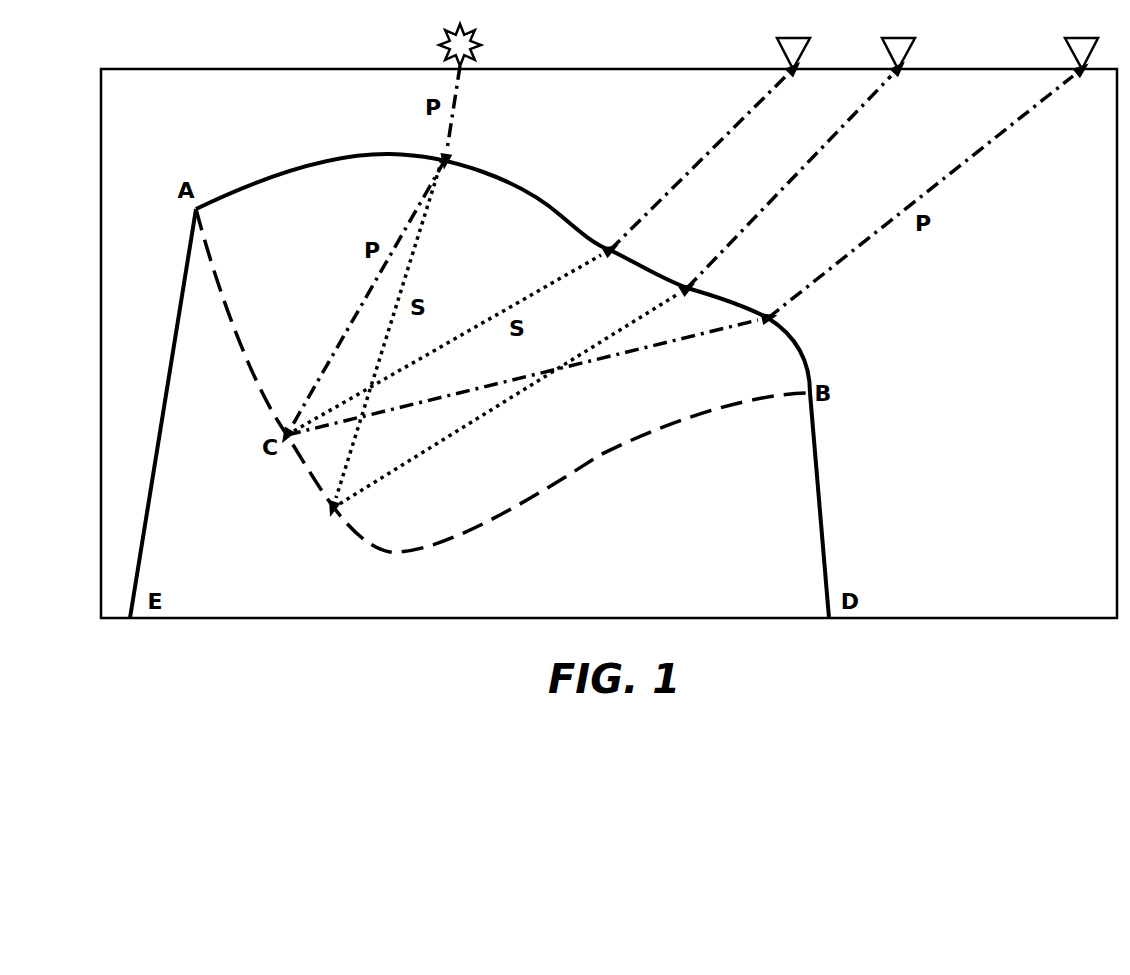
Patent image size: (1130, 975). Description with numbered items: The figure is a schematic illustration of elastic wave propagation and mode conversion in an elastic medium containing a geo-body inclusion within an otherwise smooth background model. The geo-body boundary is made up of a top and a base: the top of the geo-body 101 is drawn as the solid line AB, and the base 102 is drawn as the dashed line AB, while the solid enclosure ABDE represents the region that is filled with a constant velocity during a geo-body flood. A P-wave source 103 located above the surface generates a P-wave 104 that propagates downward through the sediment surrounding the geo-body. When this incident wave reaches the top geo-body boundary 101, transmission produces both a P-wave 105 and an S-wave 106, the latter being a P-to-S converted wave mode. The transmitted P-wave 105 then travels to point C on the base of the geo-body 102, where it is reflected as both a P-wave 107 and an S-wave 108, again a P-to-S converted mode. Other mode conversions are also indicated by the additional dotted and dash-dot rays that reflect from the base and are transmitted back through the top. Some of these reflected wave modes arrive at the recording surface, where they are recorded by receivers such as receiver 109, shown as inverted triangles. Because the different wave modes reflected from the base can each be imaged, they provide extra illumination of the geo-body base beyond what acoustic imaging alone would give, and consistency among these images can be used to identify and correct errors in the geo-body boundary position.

The top of the geo-body 101 is at (326, 160).
The base of the geo-body 102 is at (572, 465).
The P-wave source 103 is at (452, 30).
The P-wave 104 is at (456, 112).
The P-wave 105 is at (362, 306).
The S-wave 106 is at (422, 228).
The P-wave 107 is at (444, 402).
The S-wave 108 is at (440, 348).
The receiver 109 is at (786, 36).